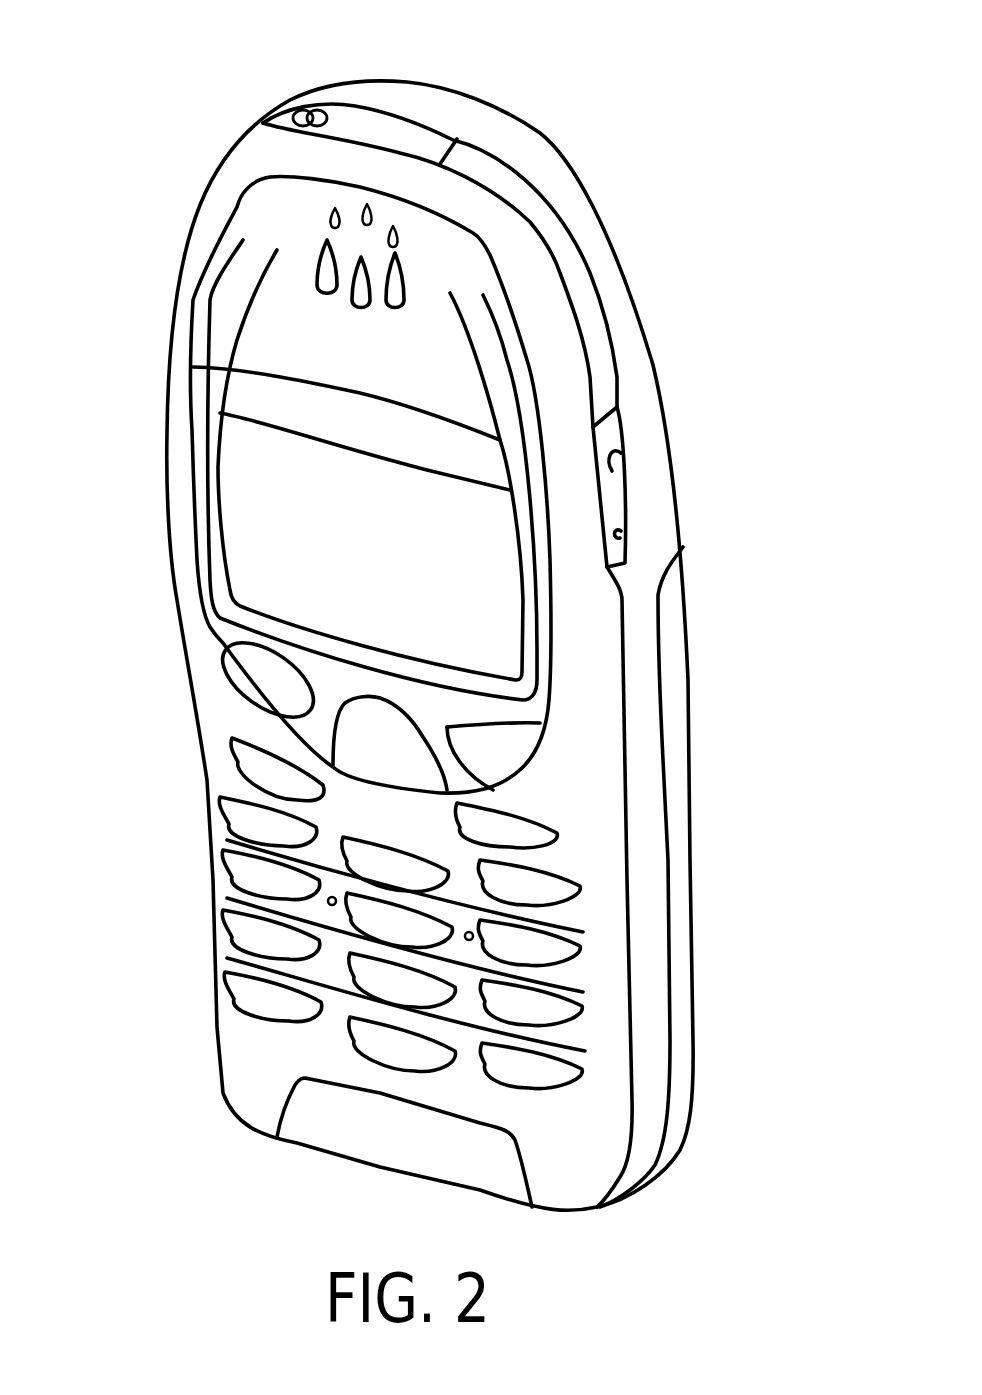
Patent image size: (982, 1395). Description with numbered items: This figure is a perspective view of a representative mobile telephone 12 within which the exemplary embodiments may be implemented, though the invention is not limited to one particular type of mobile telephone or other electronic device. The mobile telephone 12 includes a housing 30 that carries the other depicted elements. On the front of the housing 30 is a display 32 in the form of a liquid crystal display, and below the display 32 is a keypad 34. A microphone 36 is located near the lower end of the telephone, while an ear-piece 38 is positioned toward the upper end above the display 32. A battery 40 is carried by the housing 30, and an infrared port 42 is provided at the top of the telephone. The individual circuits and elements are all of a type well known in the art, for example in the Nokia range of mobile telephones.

The mobile telephone 12 is at (583, 92).
The housing 30 is at (627, 307).
The display 32 is at (487, 607).
The keypad 34 is at (532, 1073).
The microphone 36 is at (315, 1125).
The ear-piece 38 is at (348, 255).
The battery 40 is at (683, 1043).
The infrared port 42 is at (395, 127).